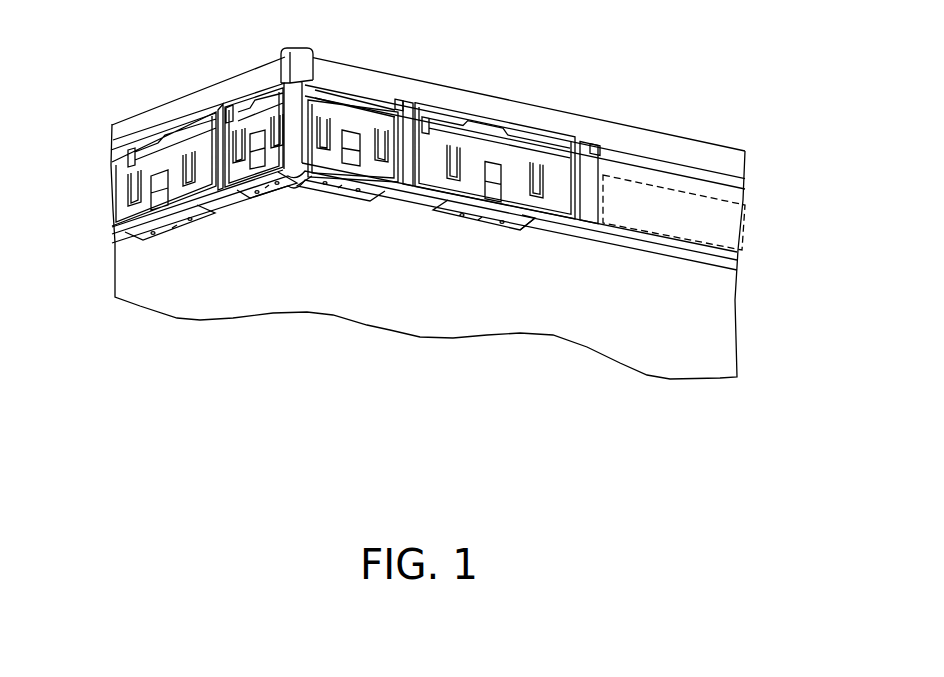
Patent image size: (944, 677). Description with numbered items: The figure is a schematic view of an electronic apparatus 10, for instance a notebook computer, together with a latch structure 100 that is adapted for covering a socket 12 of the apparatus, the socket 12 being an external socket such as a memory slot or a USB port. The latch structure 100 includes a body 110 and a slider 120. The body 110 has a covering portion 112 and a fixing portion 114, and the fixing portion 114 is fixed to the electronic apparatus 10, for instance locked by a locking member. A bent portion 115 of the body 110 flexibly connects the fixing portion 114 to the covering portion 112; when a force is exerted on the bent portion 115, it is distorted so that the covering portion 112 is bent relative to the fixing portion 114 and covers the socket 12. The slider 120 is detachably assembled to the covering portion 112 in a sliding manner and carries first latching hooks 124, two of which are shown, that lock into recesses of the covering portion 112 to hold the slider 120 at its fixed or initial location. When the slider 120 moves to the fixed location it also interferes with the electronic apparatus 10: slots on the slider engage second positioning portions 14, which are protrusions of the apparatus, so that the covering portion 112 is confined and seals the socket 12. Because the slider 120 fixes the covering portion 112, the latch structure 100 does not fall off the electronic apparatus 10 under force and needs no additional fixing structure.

The electronic apparatus 10 is at (460, 237).
The socket 12 is at (663, 181).
The second positioning portion 14 is at (397, 100).
The latch structure 100 is at (563, 200).
The body 110 is at (424, 304).
The covering portion 112 is at (420, 196).
The fixing portion 114 is at (467, 218).
The bent portion 115 is at (521, 218).
The slider 120 is at (355, 137).
The first latching hook 124 is at (457, 145).